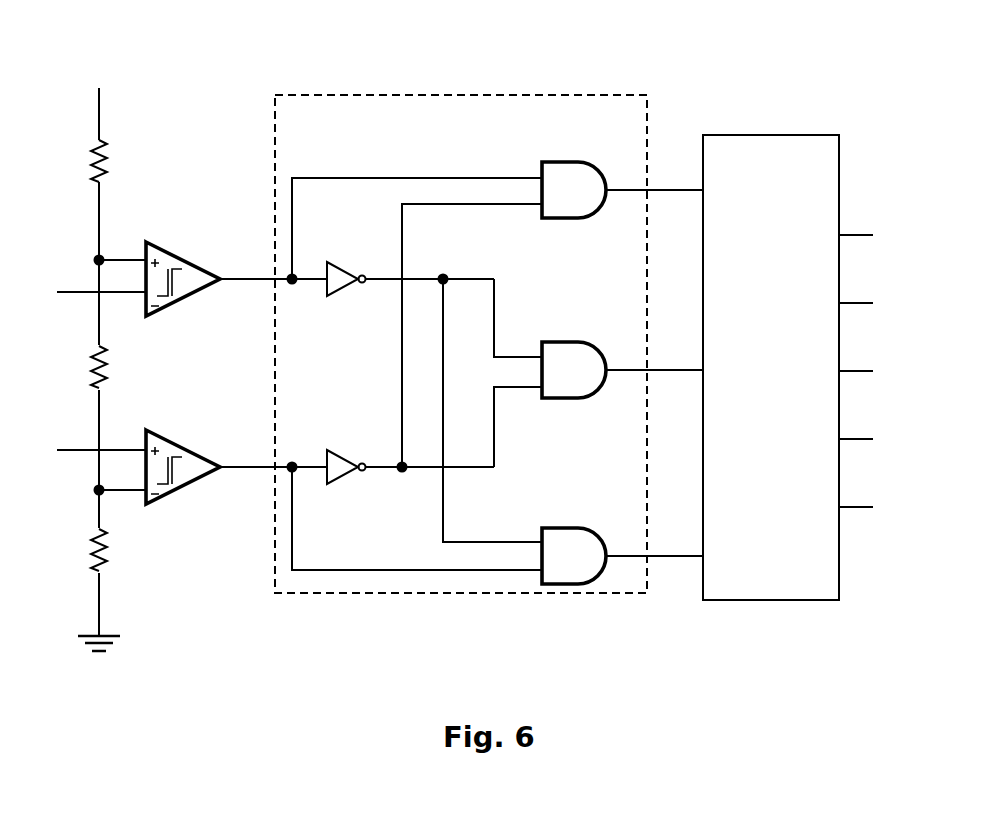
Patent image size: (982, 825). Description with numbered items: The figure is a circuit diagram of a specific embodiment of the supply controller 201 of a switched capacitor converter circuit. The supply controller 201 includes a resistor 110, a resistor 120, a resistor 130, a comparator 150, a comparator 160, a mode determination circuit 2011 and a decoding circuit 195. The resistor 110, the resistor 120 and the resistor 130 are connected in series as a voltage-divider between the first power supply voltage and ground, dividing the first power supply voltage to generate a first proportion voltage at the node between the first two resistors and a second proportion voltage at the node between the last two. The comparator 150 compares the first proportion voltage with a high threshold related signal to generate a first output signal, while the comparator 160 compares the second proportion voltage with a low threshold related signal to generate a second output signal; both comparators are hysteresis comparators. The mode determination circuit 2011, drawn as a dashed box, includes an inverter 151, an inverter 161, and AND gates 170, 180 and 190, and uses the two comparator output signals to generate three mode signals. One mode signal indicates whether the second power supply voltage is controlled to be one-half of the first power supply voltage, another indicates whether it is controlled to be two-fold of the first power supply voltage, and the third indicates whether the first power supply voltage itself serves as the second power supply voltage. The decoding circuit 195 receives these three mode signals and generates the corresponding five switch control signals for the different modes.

The resistor 110 is at (76, 161).
The resistor 120 is at (76, 367).
The resistor 130 is at (77, 550).
The comparator 150 is at (181, 256).
The comparator 160 is at (181, 447).
The inverter 151 is at (336, 262).
The inverter 161 is at (336, 450).
The AND gate 170 is at (578, 160).
The AND gate 180 is at (578, 341).
The AND gate 190 is at (578, 527).
The decoding circuit 195 is at (752, 412).
The supply controller 201 is at (241, 62).
The mode determination circuit 2011 is at (467, 95).